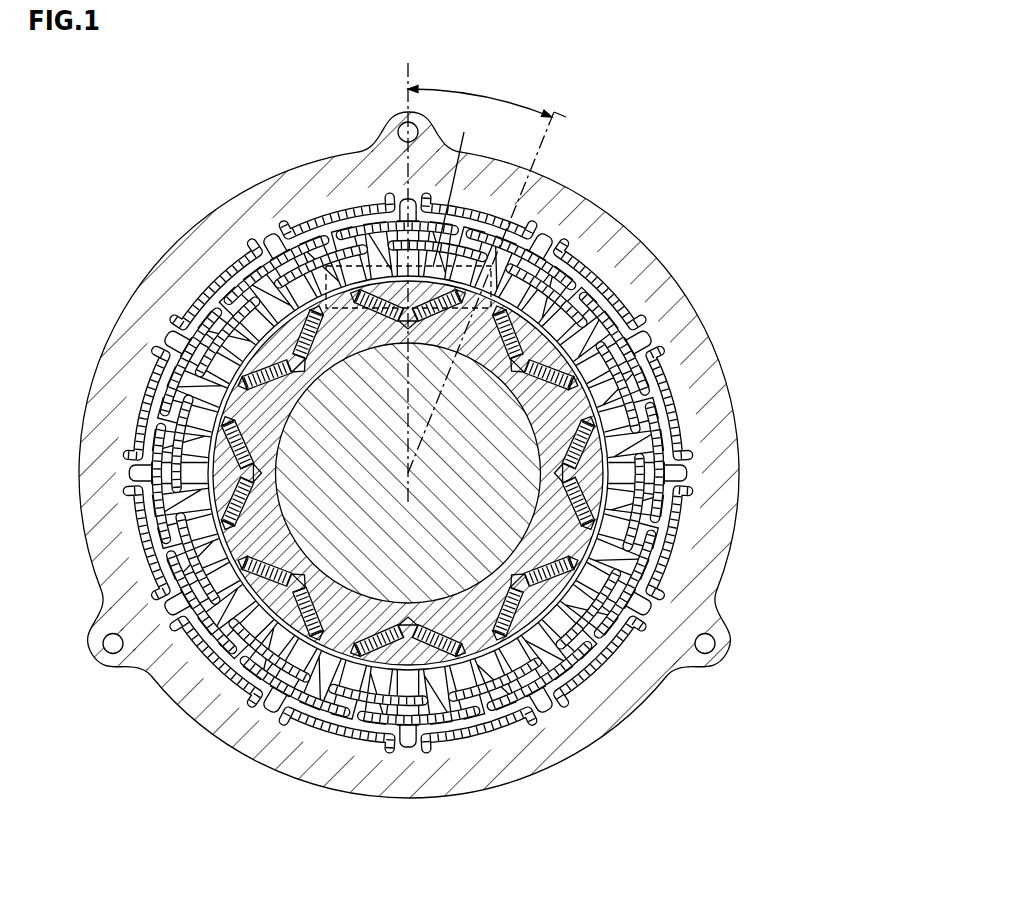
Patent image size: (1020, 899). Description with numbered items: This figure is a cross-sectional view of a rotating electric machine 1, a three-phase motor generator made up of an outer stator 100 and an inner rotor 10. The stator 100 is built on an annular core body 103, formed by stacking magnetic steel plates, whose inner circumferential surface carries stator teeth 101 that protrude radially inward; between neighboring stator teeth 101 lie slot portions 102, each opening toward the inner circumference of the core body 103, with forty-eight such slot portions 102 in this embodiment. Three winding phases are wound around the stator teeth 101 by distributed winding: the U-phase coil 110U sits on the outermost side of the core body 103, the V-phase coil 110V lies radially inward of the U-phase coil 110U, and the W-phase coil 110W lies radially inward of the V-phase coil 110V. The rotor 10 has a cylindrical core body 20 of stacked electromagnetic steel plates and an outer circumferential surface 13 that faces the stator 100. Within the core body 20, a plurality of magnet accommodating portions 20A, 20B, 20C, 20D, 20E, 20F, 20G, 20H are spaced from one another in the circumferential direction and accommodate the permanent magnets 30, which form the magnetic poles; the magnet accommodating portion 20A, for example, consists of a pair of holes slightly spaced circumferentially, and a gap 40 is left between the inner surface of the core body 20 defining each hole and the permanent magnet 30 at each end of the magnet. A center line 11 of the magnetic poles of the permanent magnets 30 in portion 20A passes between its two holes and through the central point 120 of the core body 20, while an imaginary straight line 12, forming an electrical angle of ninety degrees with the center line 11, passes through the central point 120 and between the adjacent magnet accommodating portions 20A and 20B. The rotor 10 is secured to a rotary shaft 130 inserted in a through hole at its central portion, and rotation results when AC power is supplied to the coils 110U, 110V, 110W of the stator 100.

The rotating electric machine 1 is at (672, 100).
The stator 100 is at (690, 282).
The rotor 10 is at (607, 447).
The outer circumferential surface 13 is at (615, 395).
The stator teeth 101 is at (487, 263).
The slot portion 102 is at (507, 279).
The core body 103 is at (593, 243).
The U-phase coil 110U is at (336, 212).
The V-phase coil 110V is at (310, 238).
The W-phase coil 110W is at (290, 272).
The core body 20 is at (563, 530).
The permanent magnets 30 is at (577, 503).
The gap 40 is at (580, 487).
The magnet accommodating portion 20A is at (388, 318).
The magnet accommodating portion 20B is at (498, 336).
The magnet accommodating portion 20C is at (557, 453).
The magnet accommodating portion 20D is at (528, 564).
The magnet accommodating portion 20E is at (432, 612).
The magnet accommodating portion 20F is at (325, 600).
The magnet accommodating portion 20G is at (262, 497).
The magnet accommodating portion 20H is at (284, 383).
The central point 120 is at (409, 473).
The rotary shaft 130 is at (352, 565).
The center line 11 is at (406, 77).
The imaginary straight line 12 is at (572, 109).